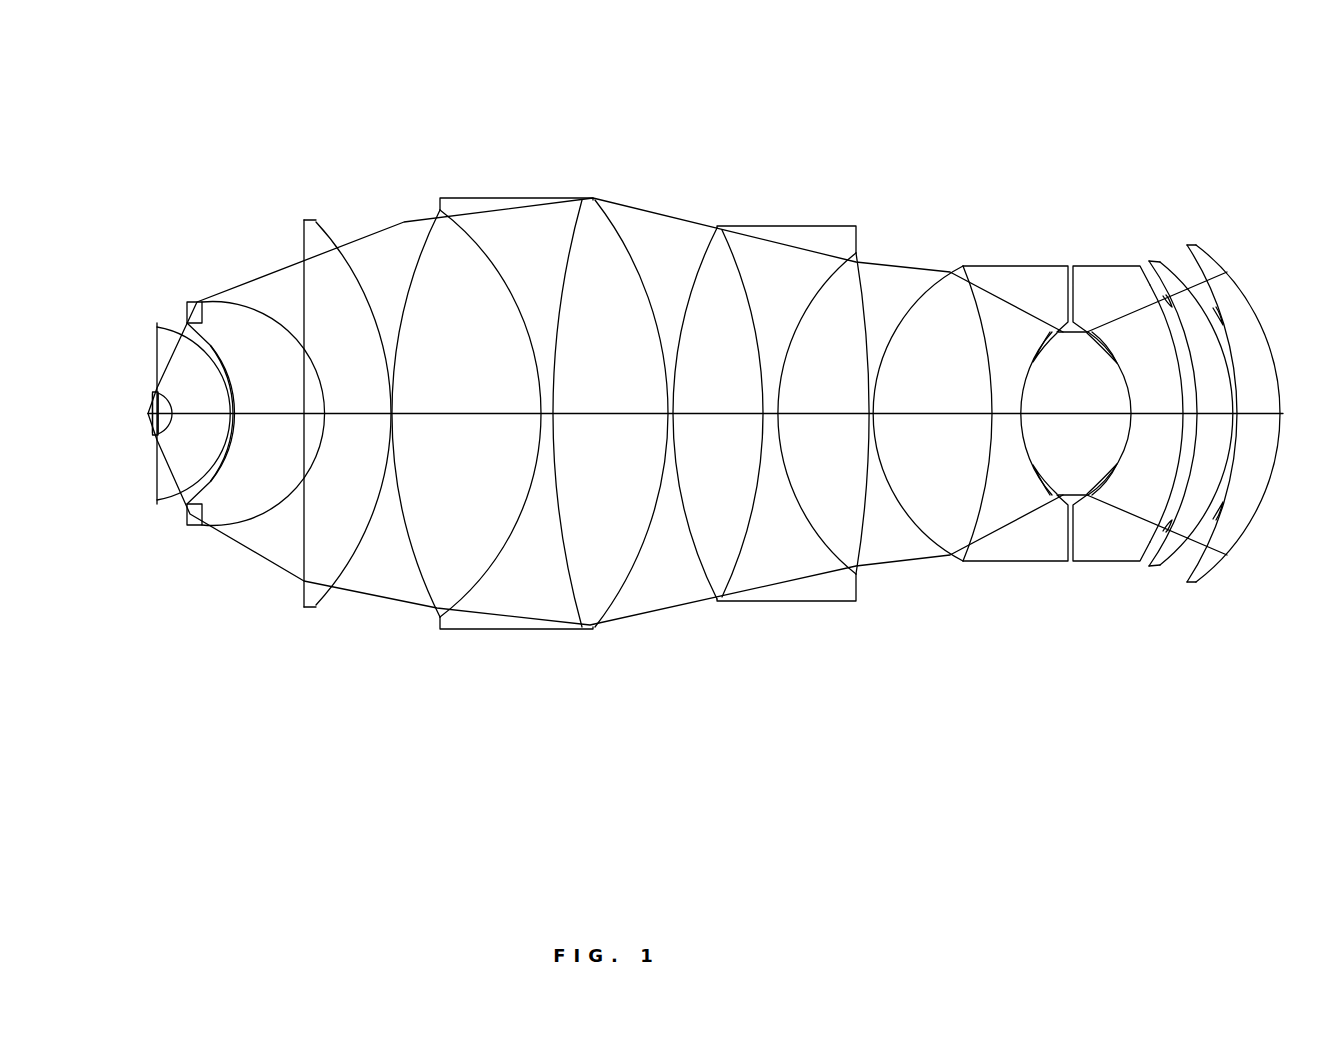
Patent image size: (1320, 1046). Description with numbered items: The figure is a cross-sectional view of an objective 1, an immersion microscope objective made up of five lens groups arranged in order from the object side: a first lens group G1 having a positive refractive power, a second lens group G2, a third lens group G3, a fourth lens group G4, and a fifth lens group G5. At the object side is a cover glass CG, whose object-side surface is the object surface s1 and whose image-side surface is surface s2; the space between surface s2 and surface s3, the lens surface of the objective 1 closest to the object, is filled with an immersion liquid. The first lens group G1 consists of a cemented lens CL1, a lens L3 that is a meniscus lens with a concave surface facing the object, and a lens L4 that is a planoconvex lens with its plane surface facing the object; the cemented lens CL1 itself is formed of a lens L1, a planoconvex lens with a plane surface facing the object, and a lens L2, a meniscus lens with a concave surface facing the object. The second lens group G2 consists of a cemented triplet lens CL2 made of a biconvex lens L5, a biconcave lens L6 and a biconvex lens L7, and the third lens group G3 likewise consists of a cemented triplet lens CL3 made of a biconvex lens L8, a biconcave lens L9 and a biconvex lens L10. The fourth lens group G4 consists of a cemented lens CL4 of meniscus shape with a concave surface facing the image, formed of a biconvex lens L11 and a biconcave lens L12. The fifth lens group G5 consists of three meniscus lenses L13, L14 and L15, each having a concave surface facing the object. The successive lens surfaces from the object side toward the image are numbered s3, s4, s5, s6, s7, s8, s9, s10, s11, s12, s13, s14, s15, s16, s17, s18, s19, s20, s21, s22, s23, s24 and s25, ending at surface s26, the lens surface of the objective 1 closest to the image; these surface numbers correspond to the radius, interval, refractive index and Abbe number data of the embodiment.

The objective 1 is at (1246, 62).
The cover glass CG is at (152, 440).
The object surface s1 is at (150, 402).
The surface of cover glass on image side s2 is at (152, 392).
The lens surface closest to object s3 is at (156, 384).
The lens surface s4 is at (170, 330).
The lens surface s5 is at (196, 300).
The lens surface s6 is at (224, 340).
The lens surface s7 is at (262, 328).
The lens surface s8 is at (303, 262).
The lens surface s9 is at (356, 278).
The lens surface s10 is at (412, 280).
The lens surface s11 is at (505, 273).
The lens surface s12 is at (563, 280).
The lens surface s13 is at (646, 287).
The lens surface s14 is at (690, 305).
The lens surface s15 is at (763, 325).
The lens surface s16 is at (800, 313).
The lens surface s17 is at (865, 315).
The lens surface s18 is at (900, 322).
The lens surface s19 is at (985, 330).
The lens surface s20 is at (1041, 340).
The lens surface s21 is at (1100, 335).
The lens surface s22 is at (1153, 290).
The lens surface s23 is at (1168, 295).
The lens surface s24 is at (1209, 322).
The lens surface s25 is at (1226, 330).
The lens surface closest to image s26 is at (1268, 340).
The lens L1 is at (163, 480).
The lens L2 is at (203, 458).
The lens L3 is at (258, 470).
The lens L4 is at (312, 560).
The biconvex lens L5 is at (449, 560).
The biconcave lens L6 is at (527, 560).
The biconvex lens L7 is at (615, 664).
The biconvex lens L8 is at (713, 540).
The biconcave lens L9 is at (778, 520).
The biconvex lens L10 is at (843, 545).
The biconvex lens L11 is at (942, 505).
The biconcave lens L12 is at (1012, 497).
The meniscus lens L13 is at (1114, 520).
The meniscus lens L14 is at (1197, 478).
The meniscus lens L15 is at (1242, 495).
The cemented lens CL1 is at (221, 690).
The cemented triplet lens CL2 is at (425, 690).
The cemented triplet lens CL3 is at (683, 690).
The cemented lens CL4 is at (910, 690).
The first lens group G1 is at (378, 734).
The second lens group G2 is at (660, 734).
The third lens group G3 is at (672, 734).
The fourth lens group G4 is at (1065, 734).
The fifth lens group G5 is at (1245, 734).